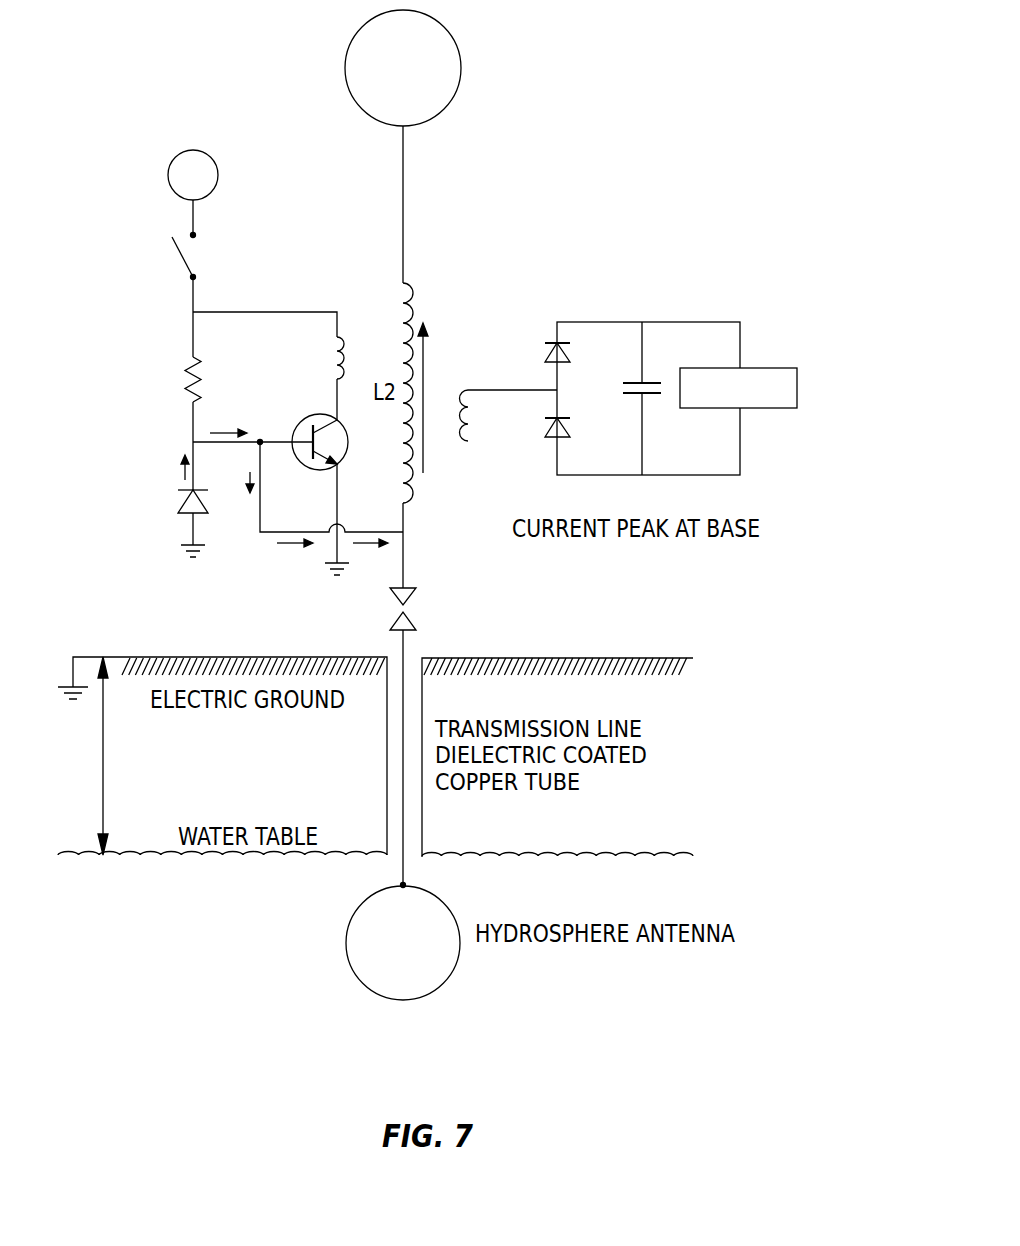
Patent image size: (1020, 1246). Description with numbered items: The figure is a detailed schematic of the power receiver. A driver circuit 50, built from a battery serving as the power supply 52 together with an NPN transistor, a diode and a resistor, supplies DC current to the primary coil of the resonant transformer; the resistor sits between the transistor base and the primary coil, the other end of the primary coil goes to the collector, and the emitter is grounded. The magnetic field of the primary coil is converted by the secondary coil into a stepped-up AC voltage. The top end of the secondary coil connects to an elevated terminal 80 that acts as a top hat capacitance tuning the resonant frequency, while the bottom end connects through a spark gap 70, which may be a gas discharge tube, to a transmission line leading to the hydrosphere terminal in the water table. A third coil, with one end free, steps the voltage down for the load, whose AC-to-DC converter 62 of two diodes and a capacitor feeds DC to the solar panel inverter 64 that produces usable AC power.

The driver circuit 50 is at (282, 140).
The power supply 52 is at (172, 163).
The AC-to-DC converter 62 is at (629, 358).
The solar panel inverter 64 is at (757, 409).
The spark gap 70 is at (376, 611).
The elevated terminal 80 is at (358, 28).